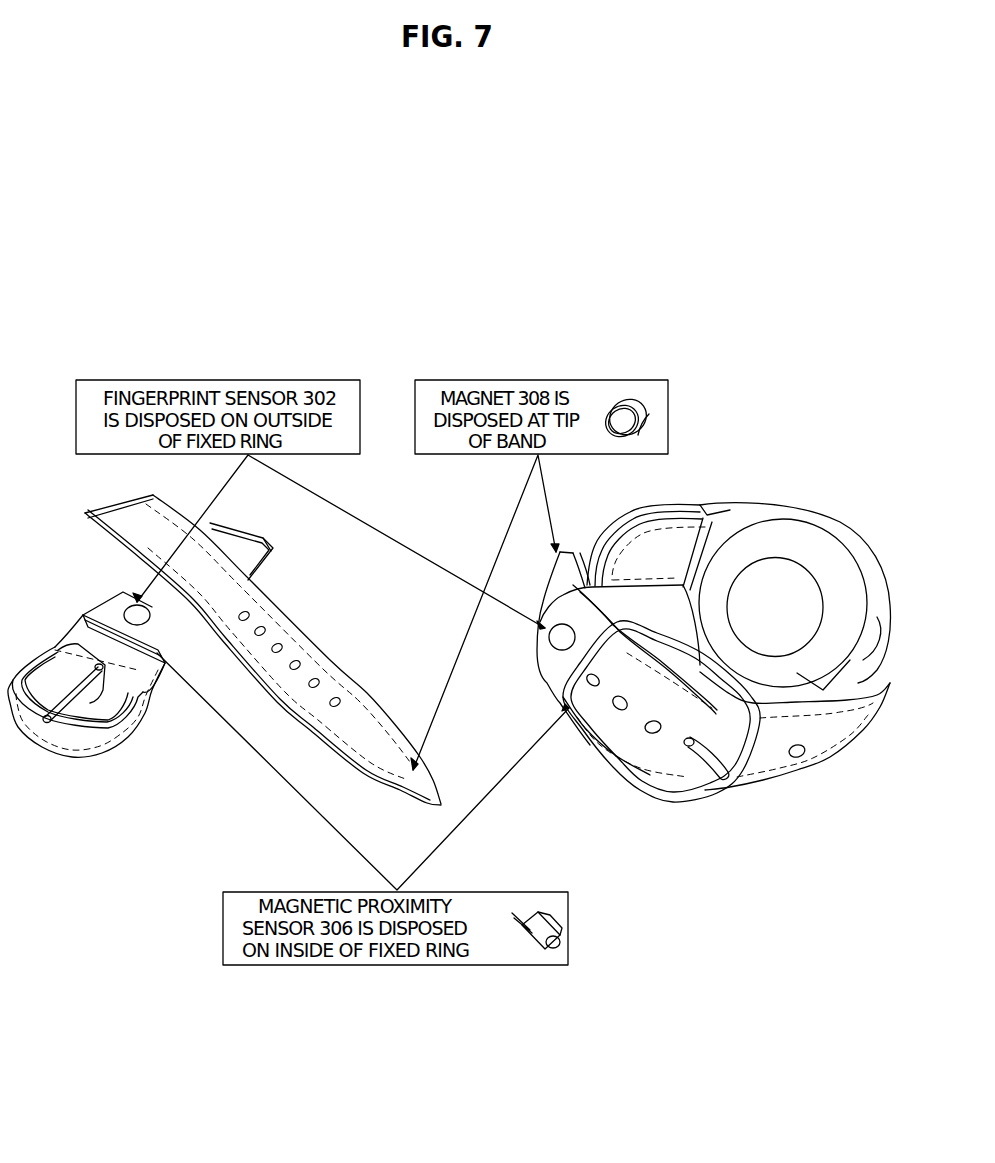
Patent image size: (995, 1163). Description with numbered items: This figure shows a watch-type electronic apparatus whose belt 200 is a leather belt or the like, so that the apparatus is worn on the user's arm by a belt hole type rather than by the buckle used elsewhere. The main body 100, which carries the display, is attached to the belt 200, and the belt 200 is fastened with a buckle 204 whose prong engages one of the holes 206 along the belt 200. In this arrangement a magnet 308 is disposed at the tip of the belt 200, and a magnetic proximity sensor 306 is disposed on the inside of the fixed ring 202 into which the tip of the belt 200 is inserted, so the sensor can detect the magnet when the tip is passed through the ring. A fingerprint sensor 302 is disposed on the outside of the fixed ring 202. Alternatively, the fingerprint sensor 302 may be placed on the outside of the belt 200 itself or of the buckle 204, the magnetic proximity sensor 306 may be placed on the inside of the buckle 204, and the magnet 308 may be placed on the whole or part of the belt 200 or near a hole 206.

The main body 100 is at (775, 545).
The belt 200 is at (825, 750).
The fixed ring 202 is at (98, 613).
The buckle 204 is at (76, 748).
The hole 206 is at (297, 660).
The fingerprint sensor 302 is at (135, 625).
The magnetic proximity sensor 306 is at (537, 930).
The magnet 308 is at (645, 415).